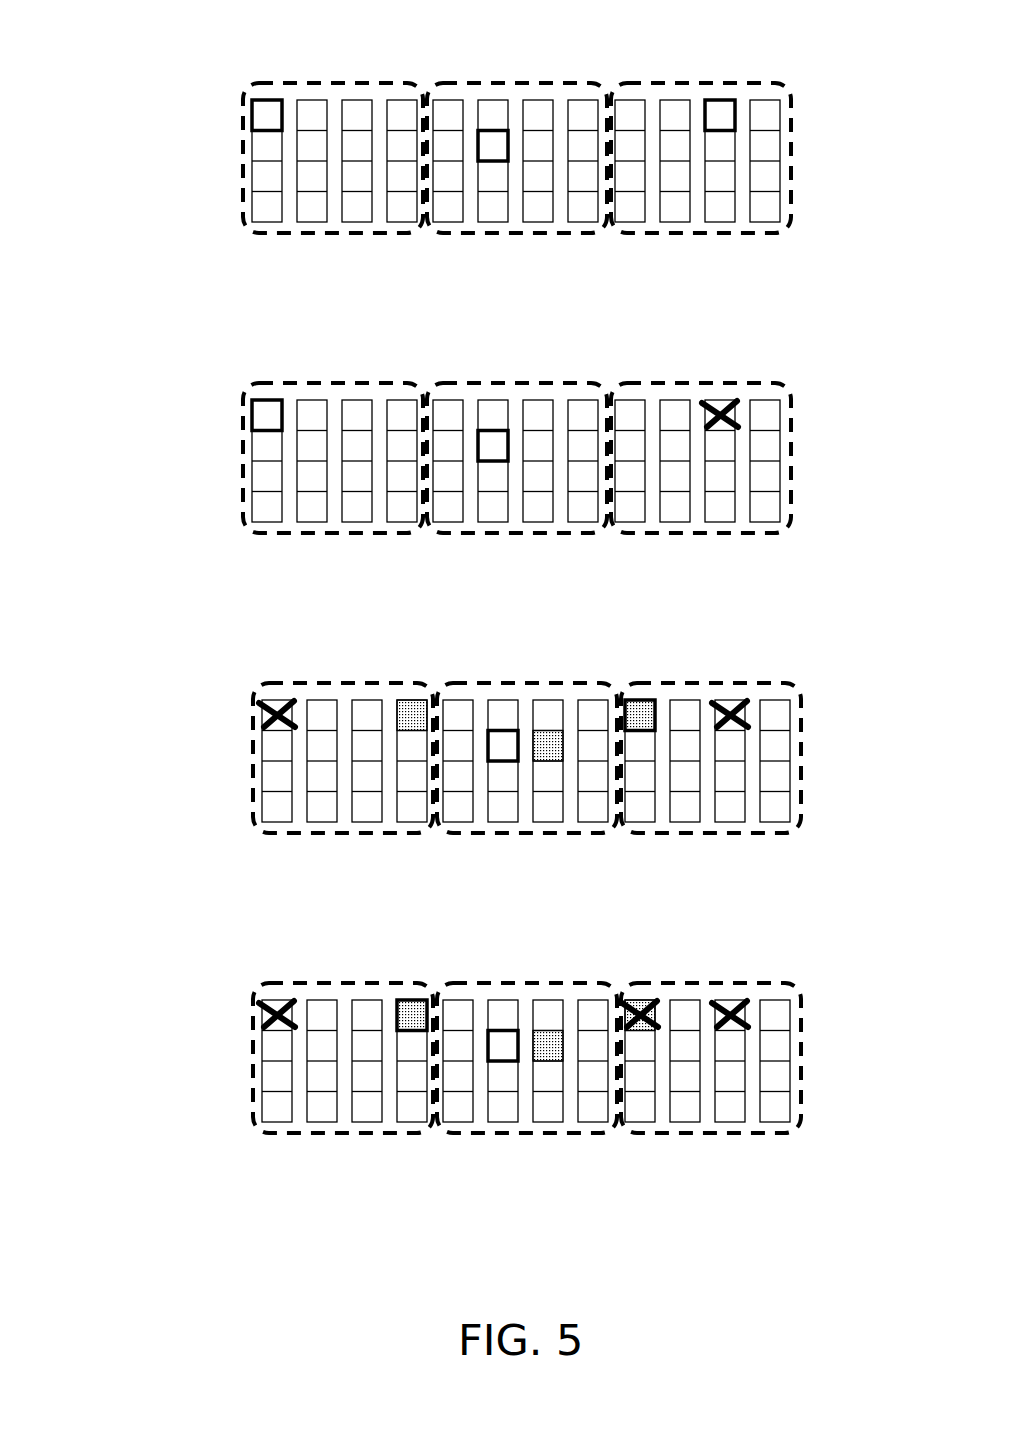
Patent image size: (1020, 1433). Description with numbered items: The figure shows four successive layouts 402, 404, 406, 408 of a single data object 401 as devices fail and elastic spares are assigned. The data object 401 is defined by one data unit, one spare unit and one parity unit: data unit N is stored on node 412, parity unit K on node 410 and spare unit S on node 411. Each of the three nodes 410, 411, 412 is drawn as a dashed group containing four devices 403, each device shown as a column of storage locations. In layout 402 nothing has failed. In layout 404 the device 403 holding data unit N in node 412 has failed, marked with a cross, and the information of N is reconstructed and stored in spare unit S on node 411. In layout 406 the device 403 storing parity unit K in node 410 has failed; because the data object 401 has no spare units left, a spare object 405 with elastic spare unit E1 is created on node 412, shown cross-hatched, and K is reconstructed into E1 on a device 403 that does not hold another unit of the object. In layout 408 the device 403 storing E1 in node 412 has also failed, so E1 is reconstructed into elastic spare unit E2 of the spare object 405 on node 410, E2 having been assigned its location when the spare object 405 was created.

The data object 401 is at (248, 117).
The layout 402 is at (426, 161).
The device 403 is at (722, 226).
The layout 404 is at (426, 461).
The spare object 405 is at (640, 697).
The layout 406 is at (431, 761).
The layout 408 is at (431, 1061).
The node 410 is at (338, 568).
The node 411 is at (522, 568).
The node 412 is at (706, 568).